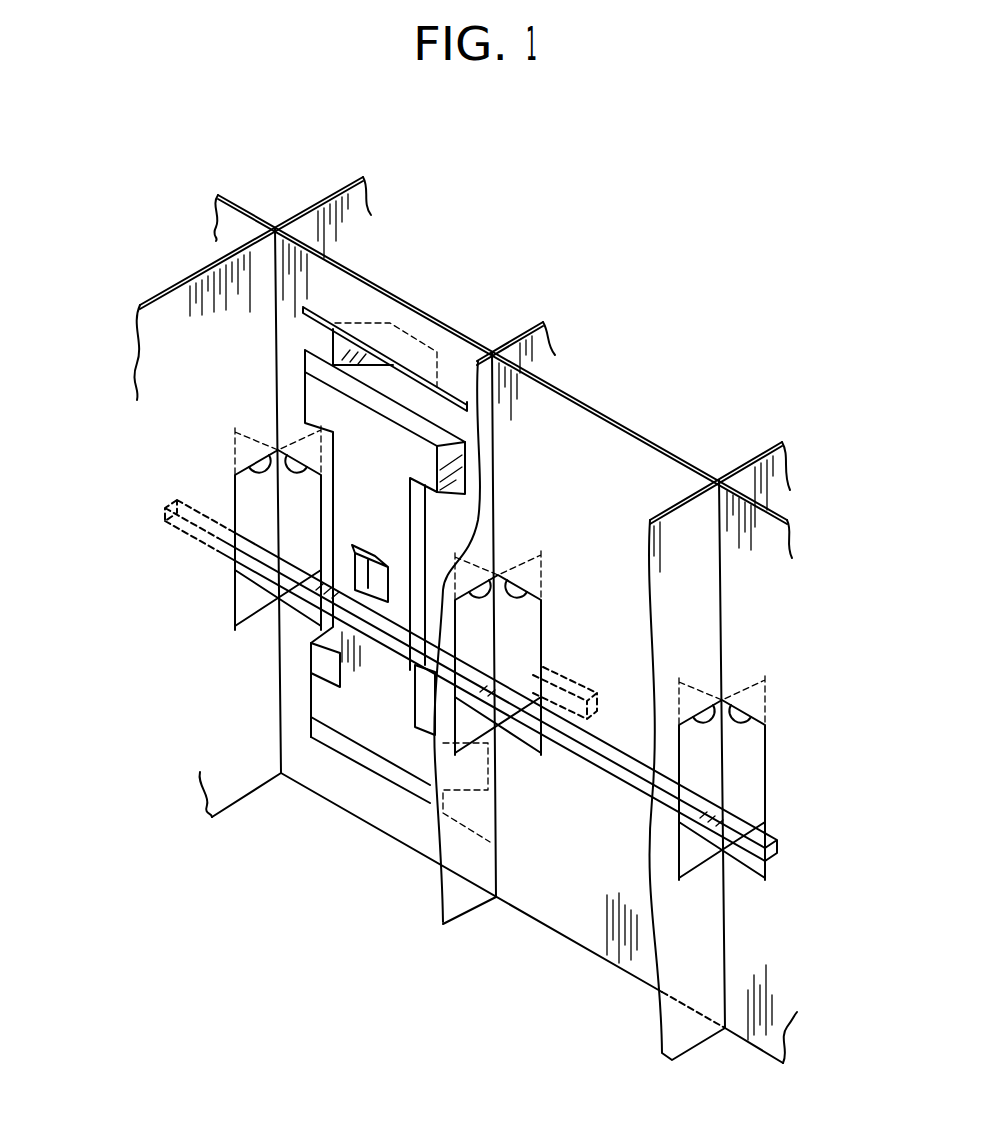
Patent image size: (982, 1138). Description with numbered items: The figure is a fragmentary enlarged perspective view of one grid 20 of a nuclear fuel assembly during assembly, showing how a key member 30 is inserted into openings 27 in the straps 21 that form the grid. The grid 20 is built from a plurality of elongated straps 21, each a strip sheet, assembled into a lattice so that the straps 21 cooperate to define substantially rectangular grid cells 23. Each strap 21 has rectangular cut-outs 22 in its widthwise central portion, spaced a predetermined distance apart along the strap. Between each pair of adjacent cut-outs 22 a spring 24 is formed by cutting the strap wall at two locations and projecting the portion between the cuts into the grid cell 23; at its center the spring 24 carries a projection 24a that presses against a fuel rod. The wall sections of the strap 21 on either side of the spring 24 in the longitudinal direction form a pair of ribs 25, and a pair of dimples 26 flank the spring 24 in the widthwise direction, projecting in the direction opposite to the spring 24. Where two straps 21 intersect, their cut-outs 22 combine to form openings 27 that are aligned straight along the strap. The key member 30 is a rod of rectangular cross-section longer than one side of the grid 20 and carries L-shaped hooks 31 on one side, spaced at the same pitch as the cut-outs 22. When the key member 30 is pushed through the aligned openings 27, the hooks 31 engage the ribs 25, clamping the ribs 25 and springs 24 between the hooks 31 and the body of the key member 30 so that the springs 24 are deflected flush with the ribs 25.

The grid 20 is at (640, 370).
The strap 21 is at (182, 277).
The cut-out 22 is at (277, 425).
The grid cell 23 is at (253, 262).
The spring 24 is at (353, 697).
The projection 24a is at (380, 605).
The rib 25 is at (447, 520).
The dimple 26 is at (432, 330).
The opening 27 is at (247, 350).
The key member 30 is at (585, 752).
The hook 31 is at (233, 557).